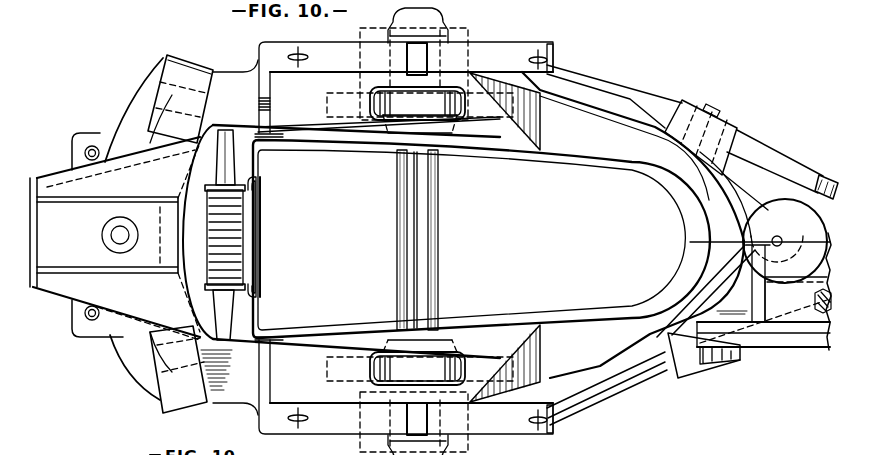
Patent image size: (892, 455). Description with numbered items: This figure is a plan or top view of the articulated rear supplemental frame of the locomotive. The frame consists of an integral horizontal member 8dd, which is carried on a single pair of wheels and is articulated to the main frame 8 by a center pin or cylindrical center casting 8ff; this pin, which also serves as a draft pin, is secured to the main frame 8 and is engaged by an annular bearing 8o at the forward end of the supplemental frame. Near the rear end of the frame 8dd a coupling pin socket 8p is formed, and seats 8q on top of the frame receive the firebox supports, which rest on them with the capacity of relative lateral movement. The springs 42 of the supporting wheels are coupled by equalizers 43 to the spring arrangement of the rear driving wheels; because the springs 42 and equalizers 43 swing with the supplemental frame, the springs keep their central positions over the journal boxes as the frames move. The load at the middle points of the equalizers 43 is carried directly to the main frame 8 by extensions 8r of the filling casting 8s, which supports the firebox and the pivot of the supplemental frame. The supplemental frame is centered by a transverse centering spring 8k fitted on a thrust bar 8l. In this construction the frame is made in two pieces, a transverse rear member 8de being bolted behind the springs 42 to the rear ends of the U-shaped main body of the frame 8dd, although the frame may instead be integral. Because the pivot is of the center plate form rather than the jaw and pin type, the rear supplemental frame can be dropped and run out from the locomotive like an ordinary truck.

The main frame 8 is at (787, 342).
The coupling pin socket 8p is at (93, 230).
The seats 8q is at (170, 100).
The transverse rear member 8de is at (130, 300).
The transverse centering spring 8k is at (225, 224).
The thrust bar 8l is at (228, 155).
The integral horizontal member 8dd is at (598, 333).
The filling casting 8s is at (740, 294).
The extensions 8r is at (687, 360).
The center pin 8ff is at (760, 241).
The annular bearing 8o is at (787, 197).
The springs 42 is at (490, 60).
The equalizers 43 is at (623, 84).